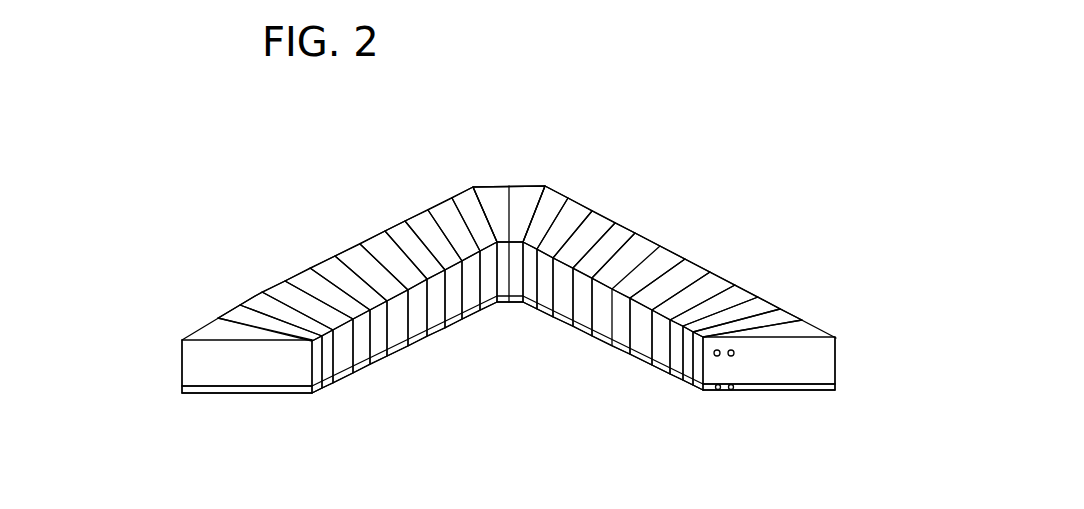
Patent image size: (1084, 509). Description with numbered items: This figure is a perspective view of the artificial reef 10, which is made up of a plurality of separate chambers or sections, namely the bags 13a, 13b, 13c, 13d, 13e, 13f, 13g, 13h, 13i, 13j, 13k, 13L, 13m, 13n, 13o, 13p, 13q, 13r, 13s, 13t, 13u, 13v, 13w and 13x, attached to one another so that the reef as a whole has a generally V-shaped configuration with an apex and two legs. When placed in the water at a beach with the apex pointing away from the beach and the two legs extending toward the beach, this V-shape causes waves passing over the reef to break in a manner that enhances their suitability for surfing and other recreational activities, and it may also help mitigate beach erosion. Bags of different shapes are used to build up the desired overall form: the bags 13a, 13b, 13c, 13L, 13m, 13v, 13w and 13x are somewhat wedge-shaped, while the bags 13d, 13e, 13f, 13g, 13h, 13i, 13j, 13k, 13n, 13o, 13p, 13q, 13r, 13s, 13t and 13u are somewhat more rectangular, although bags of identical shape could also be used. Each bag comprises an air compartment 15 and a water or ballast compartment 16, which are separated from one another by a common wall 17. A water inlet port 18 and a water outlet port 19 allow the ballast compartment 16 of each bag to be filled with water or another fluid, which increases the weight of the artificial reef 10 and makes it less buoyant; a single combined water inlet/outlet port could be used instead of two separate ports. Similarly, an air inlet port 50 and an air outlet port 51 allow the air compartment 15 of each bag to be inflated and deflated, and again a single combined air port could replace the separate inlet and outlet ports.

The artificial reef 10 is at (765, 138).
The bag 13a is at (193, 333).
The bag 13b is at (214, 321).
The bag 13c is at (256, 298).
The bag 13d is at (281, 285).
The bag 13e is at (313, 268).
The bag 13f is at (341, 253).
The bag 13g is at (377, 240).
The bag 13h is at (407, 226).
The bag 13i is at (412, 217).
The bag 13j is at (440, 203).
The bag 13k is at (490, 186).
The bag 13L is at (510, 186).
The bag 13m is at (523, 186).
The bag 13n is at (560, 192).
The bag 13o is at (577, 202).
The bag 13p is at (595, 211).
The bag 13q is at (623, 228).
The bag 13r is at (652, 242).
The bag 13s is at (687, 260).
The bag 13t is at (712, 273).
The bag 13u is at (740, 287).
The bag 13v is at (770, 297).
The bag 13w is at (798, 313).
The bag 13x is at (826, 333).
The air compartment 15 is at (181, 368).
The ballast compartment 16 is at (258, 385).
The common wall 17 is at (223, 390).
The water inlet port 18 is at (717, 390).
The water outlet port 19 is at (733, 391).
The air inlet port 50 is at (715, 356).
The air outlet port 51 is at (729, 356).